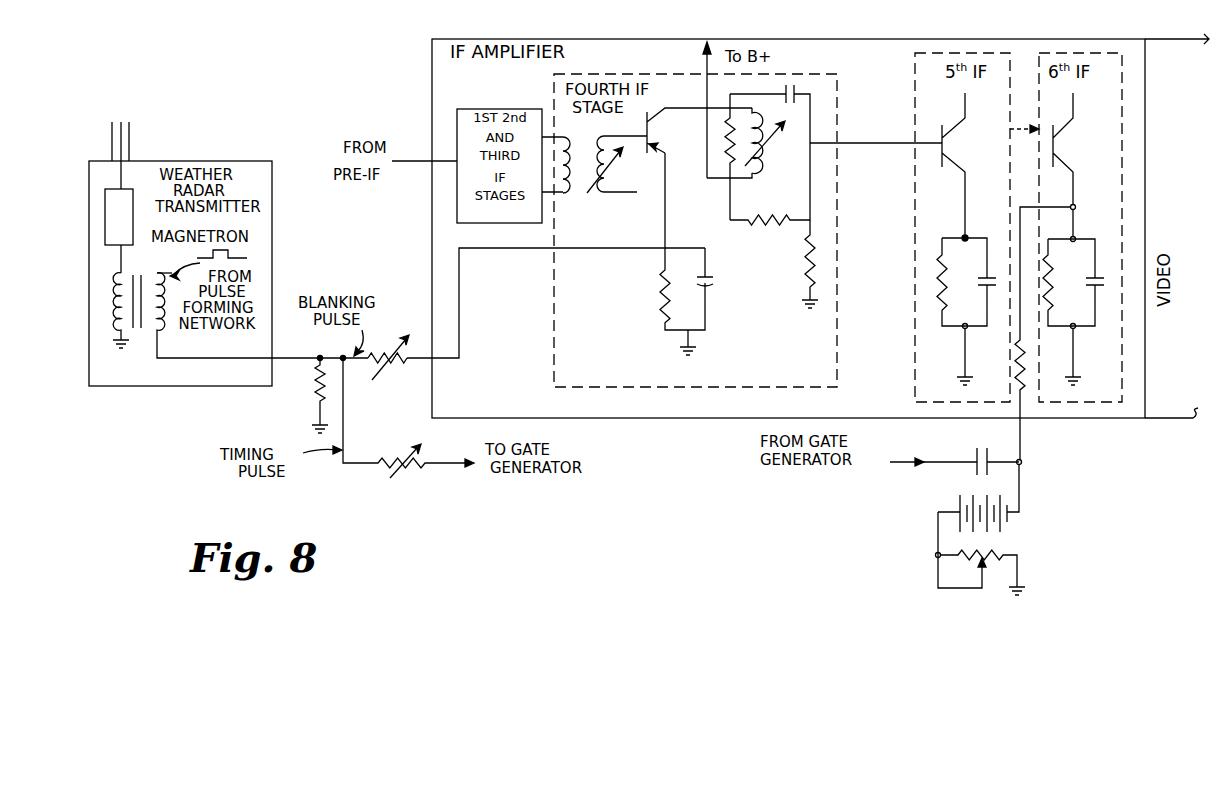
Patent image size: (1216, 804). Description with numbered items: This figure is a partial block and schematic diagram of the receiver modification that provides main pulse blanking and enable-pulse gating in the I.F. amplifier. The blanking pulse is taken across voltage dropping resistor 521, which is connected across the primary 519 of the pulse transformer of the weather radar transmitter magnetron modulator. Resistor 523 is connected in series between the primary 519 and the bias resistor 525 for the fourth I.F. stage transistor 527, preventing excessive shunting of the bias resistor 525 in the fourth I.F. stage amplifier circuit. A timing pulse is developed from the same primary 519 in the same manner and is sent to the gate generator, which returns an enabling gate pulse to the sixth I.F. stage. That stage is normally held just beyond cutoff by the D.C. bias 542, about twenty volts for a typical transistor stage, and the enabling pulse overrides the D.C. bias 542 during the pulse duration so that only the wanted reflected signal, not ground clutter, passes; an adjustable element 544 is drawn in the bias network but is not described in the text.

The primary of the pulse transformer 519 is at (160, 346).
The voltage dropping resistor 521 is at (318, 393).
The series resistor 523 is at (403, 364).
The bias resistor 525 is at (663, 269).
The fourth I.F. stage transistor 527 is at (665, 150).
The D.C. bias 542 is at (1012, 518).
The potentiometer 544 is at (966, 590).